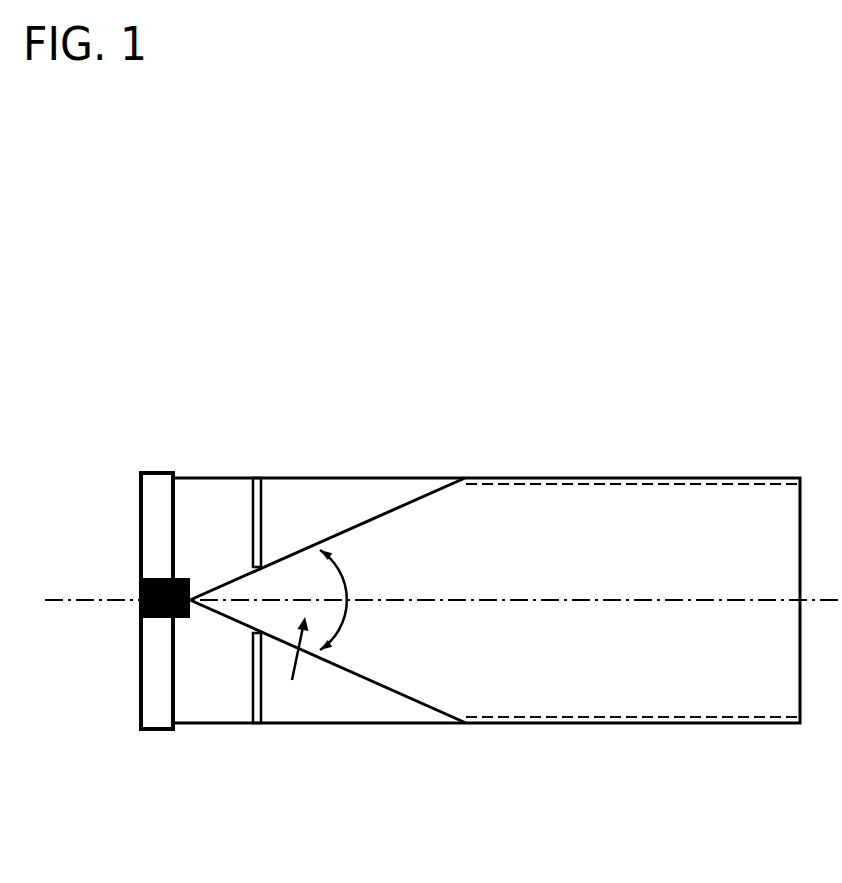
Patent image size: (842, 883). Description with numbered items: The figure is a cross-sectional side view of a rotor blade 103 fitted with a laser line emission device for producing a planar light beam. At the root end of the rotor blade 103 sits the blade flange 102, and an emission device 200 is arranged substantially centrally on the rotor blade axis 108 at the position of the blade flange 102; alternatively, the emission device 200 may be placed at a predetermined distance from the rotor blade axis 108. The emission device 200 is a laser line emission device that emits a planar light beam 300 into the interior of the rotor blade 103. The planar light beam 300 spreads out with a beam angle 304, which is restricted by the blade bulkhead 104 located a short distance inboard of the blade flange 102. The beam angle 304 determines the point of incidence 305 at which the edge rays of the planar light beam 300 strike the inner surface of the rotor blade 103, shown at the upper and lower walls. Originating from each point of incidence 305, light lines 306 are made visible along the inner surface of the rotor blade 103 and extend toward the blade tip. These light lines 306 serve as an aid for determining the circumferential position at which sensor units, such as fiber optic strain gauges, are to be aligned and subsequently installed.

The blade flange 102 is at (165, 473).
The rotor blade 103 is at (398, 477).
The blade bulkhead 104 is at (261, 525).
The rotor blade axis 108 is at (75, 603).
The emission device 200 is at (140, 590).
The planar light beam 300 is at (299, 668).
The beam angle 304 is at (348, 588).
The point of incidence 305 is at (466, 480).
The light lines 306 is at (650, 484).